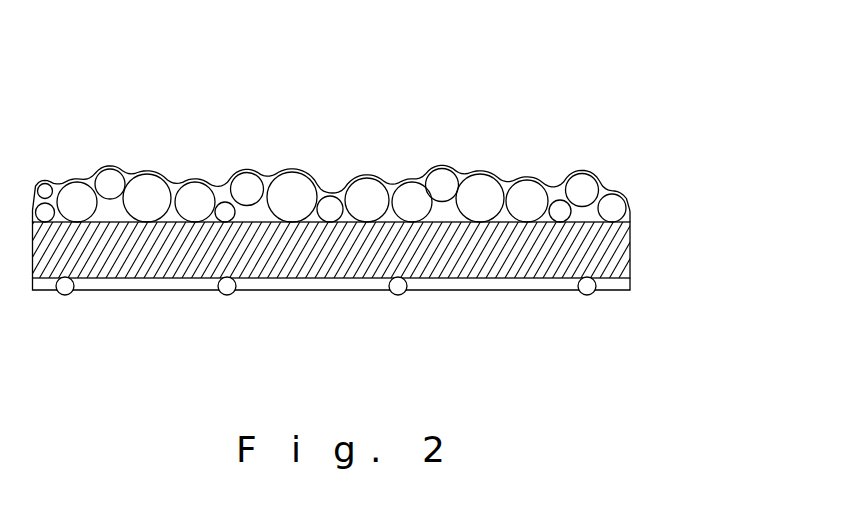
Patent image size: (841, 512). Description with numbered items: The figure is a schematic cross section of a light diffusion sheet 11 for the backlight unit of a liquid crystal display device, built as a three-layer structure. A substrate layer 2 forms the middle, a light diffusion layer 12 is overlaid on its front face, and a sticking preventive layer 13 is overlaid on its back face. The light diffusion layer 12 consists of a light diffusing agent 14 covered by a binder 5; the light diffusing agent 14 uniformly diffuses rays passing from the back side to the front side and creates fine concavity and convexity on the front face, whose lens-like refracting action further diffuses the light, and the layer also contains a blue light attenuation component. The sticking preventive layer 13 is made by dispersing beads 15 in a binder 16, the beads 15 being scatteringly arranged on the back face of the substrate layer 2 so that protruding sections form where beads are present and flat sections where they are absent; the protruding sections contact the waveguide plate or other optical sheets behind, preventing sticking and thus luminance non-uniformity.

The light diffusion sheet 11 is at (570, 137).
The light diffusion layer 12 is at (704, 160).
The binder 5 is at (612, 172).
The light diffusing agent 14 is at (615, 210).
The substrate layer 2 is at (620, 250).
The sticking preventive layer 13 is at (704, 273).
The binder 16 is at (617, 283).
The beads 15 is at (590, 293).